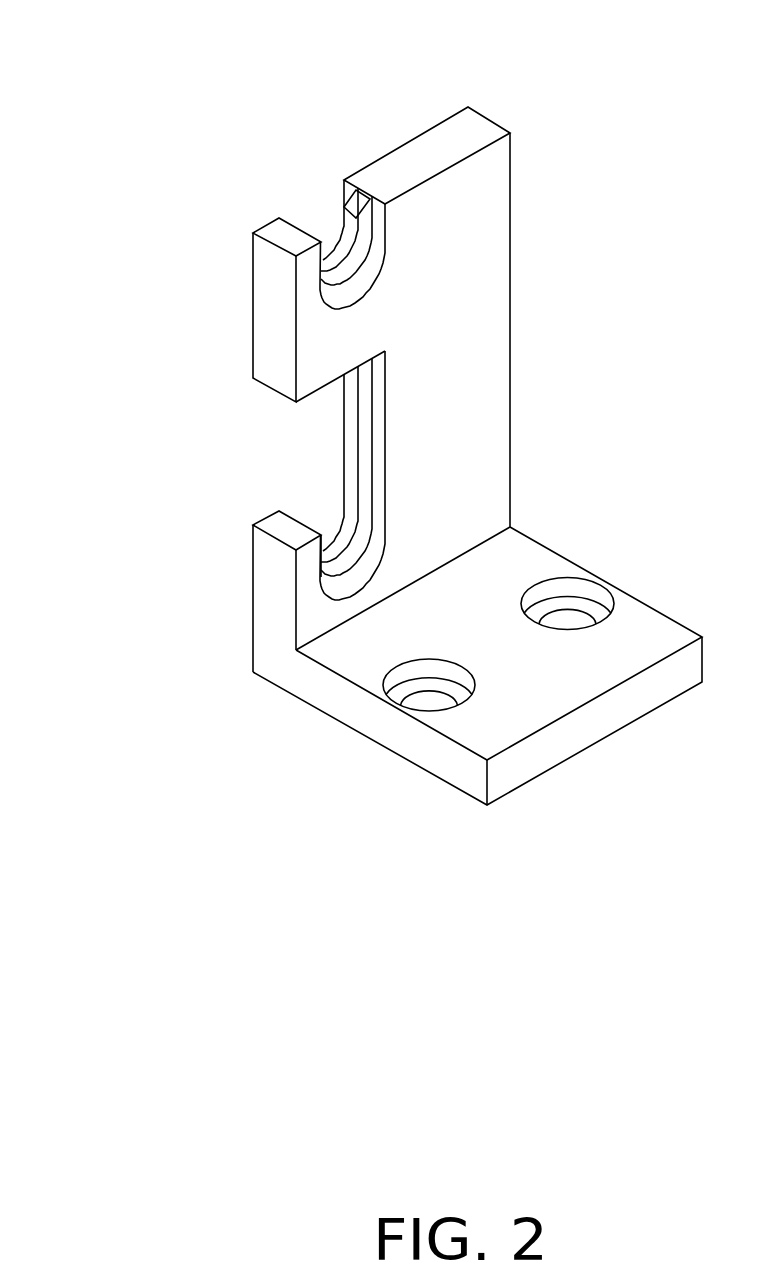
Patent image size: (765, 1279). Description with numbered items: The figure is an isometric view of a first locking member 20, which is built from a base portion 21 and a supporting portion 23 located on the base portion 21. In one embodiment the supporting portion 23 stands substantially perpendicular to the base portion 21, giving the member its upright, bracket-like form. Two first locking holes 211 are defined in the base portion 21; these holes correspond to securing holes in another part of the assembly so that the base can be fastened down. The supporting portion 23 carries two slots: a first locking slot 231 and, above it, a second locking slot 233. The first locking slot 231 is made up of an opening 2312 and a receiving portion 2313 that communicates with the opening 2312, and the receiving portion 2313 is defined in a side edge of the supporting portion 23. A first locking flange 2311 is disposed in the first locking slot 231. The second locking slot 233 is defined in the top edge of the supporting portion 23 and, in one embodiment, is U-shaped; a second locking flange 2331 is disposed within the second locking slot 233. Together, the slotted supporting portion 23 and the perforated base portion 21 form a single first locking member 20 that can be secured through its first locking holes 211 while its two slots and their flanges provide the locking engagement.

The first locking member 20 is at (560, 80).
The base portion 21 is at (520, 560).
The first locking holes 211 is at (568, 620).
The supporting portion 23 is at (475, 337).
The first locking slot 231 is at (122, 403).
The first locking flange 2311 is at (358, 442).
The opening 2312 is at (278, 453).
The receiving portion 2313 is at (328, 537).
The second locking slot 233 is at (330, 233).
The second locking flange 2331 is at (348, 232).